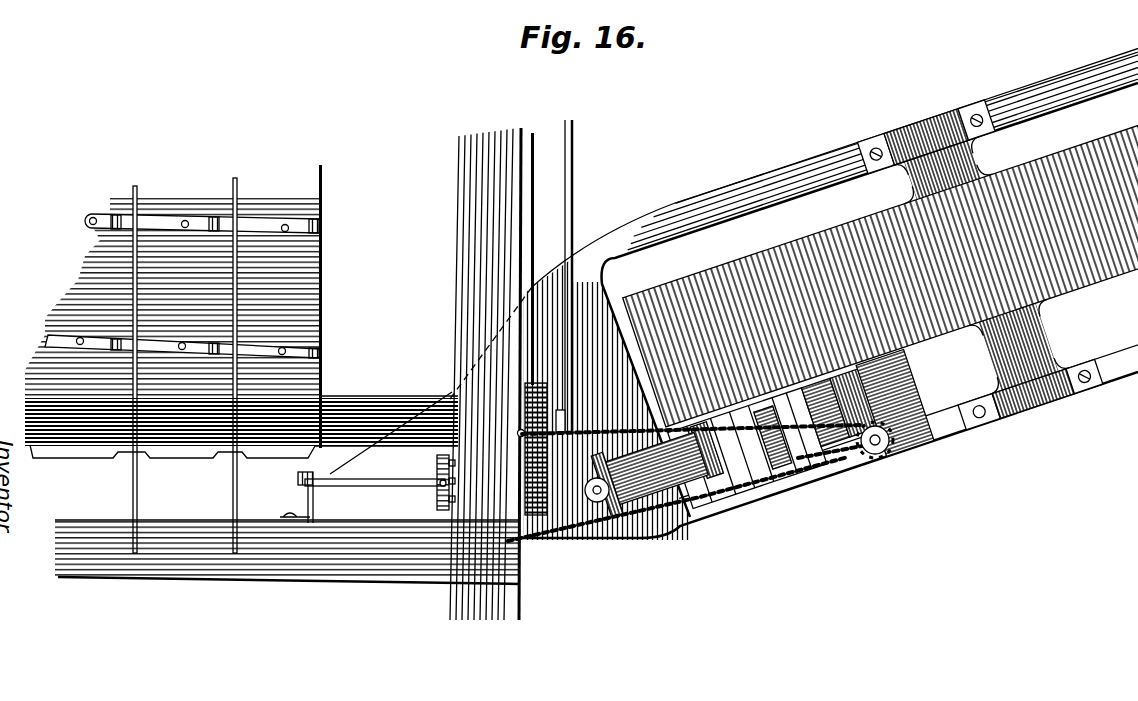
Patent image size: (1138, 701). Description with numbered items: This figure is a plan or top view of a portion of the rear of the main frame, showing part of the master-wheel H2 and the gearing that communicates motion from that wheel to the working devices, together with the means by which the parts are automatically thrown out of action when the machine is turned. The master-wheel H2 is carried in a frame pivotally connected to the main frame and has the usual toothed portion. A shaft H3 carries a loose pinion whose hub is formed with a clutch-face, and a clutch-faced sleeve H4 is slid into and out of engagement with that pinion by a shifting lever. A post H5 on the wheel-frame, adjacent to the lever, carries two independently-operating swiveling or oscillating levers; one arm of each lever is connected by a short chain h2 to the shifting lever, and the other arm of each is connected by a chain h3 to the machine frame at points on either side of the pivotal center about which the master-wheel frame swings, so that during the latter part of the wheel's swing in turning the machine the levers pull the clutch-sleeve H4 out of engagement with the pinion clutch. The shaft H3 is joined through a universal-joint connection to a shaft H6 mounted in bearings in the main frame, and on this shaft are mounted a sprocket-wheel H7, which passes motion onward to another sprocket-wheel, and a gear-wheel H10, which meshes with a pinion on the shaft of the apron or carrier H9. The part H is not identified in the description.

The rack bar H is at (536, 384).
The master-wheel H2 is at (880, 267).
The shaft H3 is at (706, 496).
The clutch-faced sleeve H4 is at (800, 393).
The post H5 is at (893, 452).
The shaft H6 is at (335, 522).
The sprocket-wheel H7 is at (440, 490).
The apron or carrier H9 is at (323, 337).
The gear-wheel H10 is at (548, 538).
The short chain h2 is at (870, 467).
The chain h3 is at (600, 432).